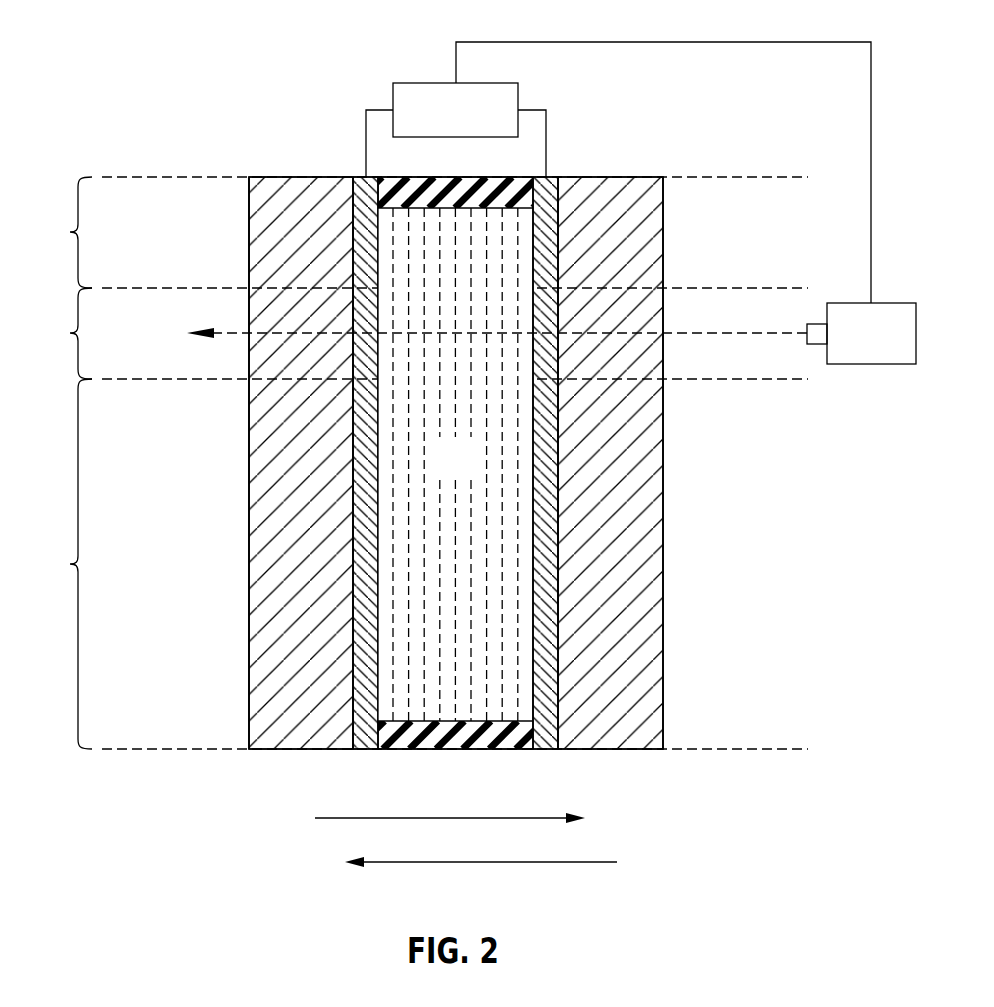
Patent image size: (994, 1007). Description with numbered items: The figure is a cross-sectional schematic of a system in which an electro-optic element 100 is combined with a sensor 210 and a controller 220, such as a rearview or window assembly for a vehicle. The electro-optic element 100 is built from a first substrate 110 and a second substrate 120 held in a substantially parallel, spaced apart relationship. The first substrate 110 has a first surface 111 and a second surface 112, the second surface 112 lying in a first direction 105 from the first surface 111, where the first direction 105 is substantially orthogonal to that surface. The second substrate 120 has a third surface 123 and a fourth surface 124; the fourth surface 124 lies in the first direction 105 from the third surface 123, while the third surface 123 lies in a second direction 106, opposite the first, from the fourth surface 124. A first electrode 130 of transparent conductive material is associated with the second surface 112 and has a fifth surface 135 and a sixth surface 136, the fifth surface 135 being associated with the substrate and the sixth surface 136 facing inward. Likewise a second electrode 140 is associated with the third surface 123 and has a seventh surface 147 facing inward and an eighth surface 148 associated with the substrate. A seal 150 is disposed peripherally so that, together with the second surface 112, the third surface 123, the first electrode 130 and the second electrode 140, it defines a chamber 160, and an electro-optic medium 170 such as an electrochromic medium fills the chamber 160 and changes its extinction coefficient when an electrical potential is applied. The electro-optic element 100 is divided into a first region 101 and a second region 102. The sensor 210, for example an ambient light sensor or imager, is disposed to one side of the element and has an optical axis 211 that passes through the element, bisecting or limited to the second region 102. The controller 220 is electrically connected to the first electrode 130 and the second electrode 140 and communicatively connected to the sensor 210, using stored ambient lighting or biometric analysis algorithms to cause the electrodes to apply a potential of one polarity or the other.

The electro-optic element 100 is at (160, 128).
The first region 101 is at (61, 463).
The second region 102 is at (61, 333).
The first direction 105 is at (469, 819).
The second direction 106 is at (461, 863).
The first substrate 110 is at (290, 242).
The first surface 111 is at (249, 223).
The second surface 112 is at (352, 441).
The second substrate 120 is at (632, 243).
The third surface 123 is at (558, 445).
The fourth surface 124 is at (663, 223).
The first electrode 130 is at (363, 582).
The fifth surface 135 is at (352, 500).
The sixth surface 136 is at (377, 643).
The second electrode 140 is at (548, 582).
The seventh surface 147 is at (535, 642).
The eighth surface 148 is at (558, 505).
The seal 150 is at (497, 737).
The chamber 160 is at (435, 475).
The electro-optic medium 170 is at (470, 677).
The sensor 210 is at (891, 292).
The optical axis 211 is at (775, 333).
The controller 220 is at (406, 72).